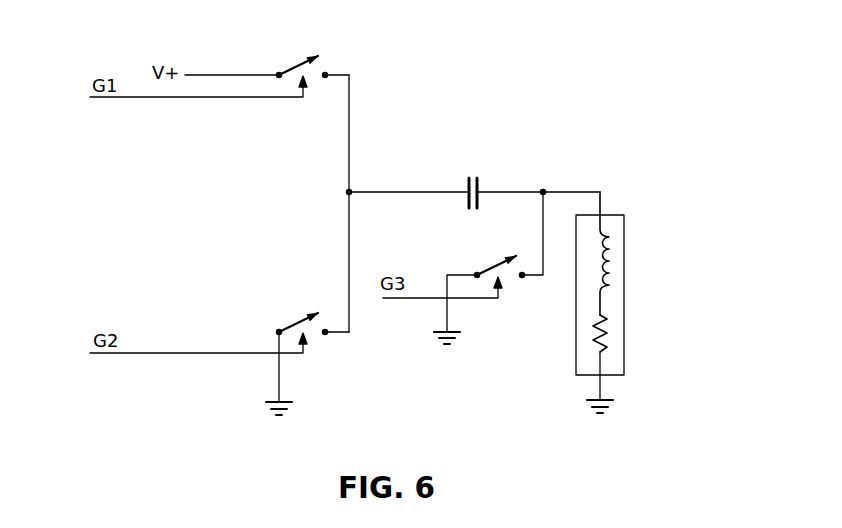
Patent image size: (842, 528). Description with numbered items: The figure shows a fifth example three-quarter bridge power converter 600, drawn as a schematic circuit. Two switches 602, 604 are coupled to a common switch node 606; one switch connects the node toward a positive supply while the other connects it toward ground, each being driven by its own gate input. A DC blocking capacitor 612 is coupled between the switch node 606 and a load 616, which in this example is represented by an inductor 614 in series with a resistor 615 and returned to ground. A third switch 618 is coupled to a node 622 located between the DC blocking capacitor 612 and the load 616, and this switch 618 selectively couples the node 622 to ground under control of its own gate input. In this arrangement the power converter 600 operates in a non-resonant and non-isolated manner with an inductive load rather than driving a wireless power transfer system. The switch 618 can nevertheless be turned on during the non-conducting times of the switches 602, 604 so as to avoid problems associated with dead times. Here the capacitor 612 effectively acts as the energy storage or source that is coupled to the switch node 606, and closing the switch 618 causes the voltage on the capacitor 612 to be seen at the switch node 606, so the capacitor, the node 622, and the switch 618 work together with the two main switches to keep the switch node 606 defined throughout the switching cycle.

The three-quarter bridge power converter 600 is at (598, 64).
The switch 602 is at (300, 65).
The switch 604 is at (302, 320).
The switch node 606 is at (351, 196).
The DC blocking capacitor 612 is at (467, 181).
The inductor 614 is at (605, 233).
The resistor 615 is at (607, 339).
The load 616 is at (619, 378).
The switch 618 is at (492, 267).
The node 622 is at (545, 189).